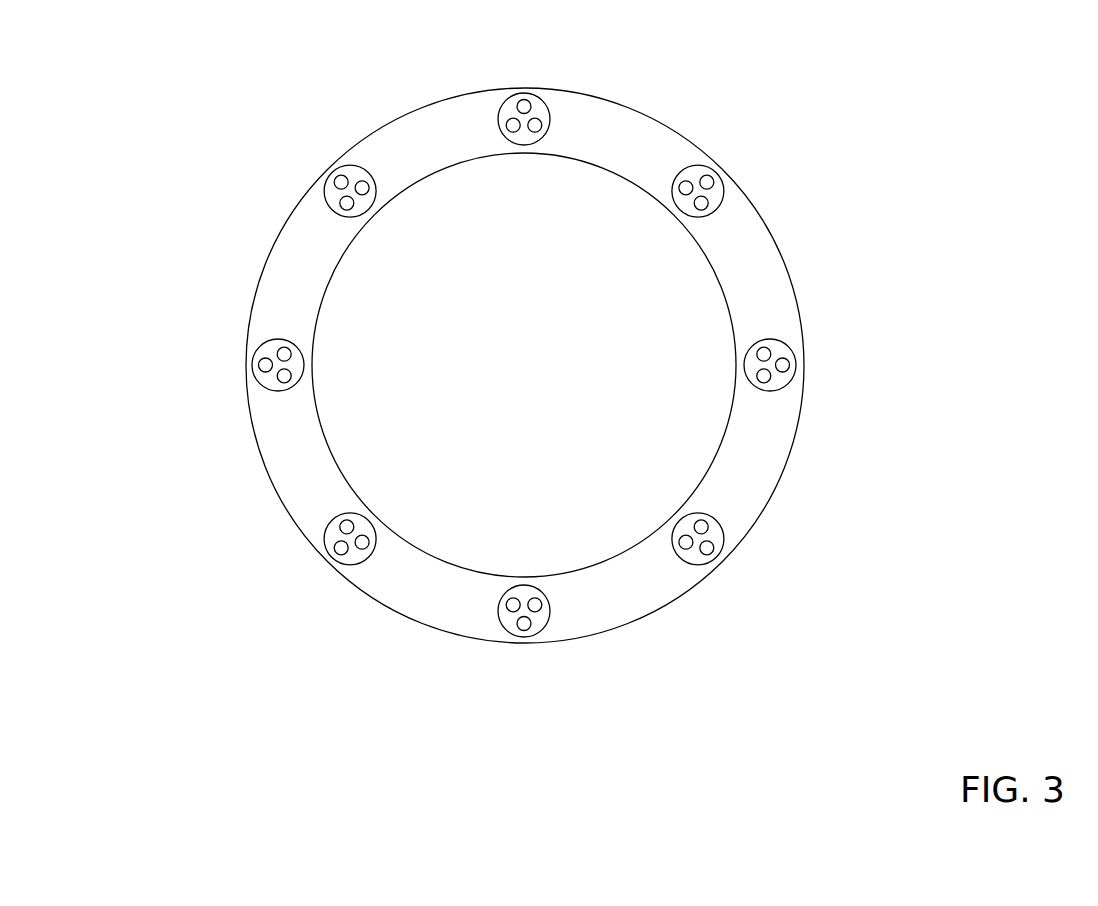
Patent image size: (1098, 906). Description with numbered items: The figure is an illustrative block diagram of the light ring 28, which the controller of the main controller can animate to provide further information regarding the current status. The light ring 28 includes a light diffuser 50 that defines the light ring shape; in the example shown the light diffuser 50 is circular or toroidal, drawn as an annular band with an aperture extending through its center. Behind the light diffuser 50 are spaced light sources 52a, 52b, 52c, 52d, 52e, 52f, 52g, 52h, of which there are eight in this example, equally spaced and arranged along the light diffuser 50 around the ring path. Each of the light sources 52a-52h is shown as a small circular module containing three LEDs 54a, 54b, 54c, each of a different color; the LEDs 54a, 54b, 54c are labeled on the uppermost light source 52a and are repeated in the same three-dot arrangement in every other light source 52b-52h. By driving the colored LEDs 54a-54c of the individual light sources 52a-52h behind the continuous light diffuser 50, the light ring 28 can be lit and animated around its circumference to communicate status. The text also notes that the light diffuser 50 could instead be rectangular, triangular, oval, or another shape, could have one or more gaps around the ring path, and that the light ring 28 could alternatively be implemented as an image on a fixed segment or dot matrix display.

The light ring 28 is at (908, 65).
The light diffuser 50 is at (778, 245).
The light source 52a is at (536, 125).
The light source 52b is at (700, 166).
The light source 52c is at (789, 346).
The light source 52d is at (711, 562).
The light source 52e is at (537, 634).
The light source 52f is at (331, 560).
The light source 52g is at (262, 343).
The light source 52h is at (345, 167).
The LED 54a is at (522, 100).
The LED 54b is at (514, 133).
The LED 54c is at (535, 133).